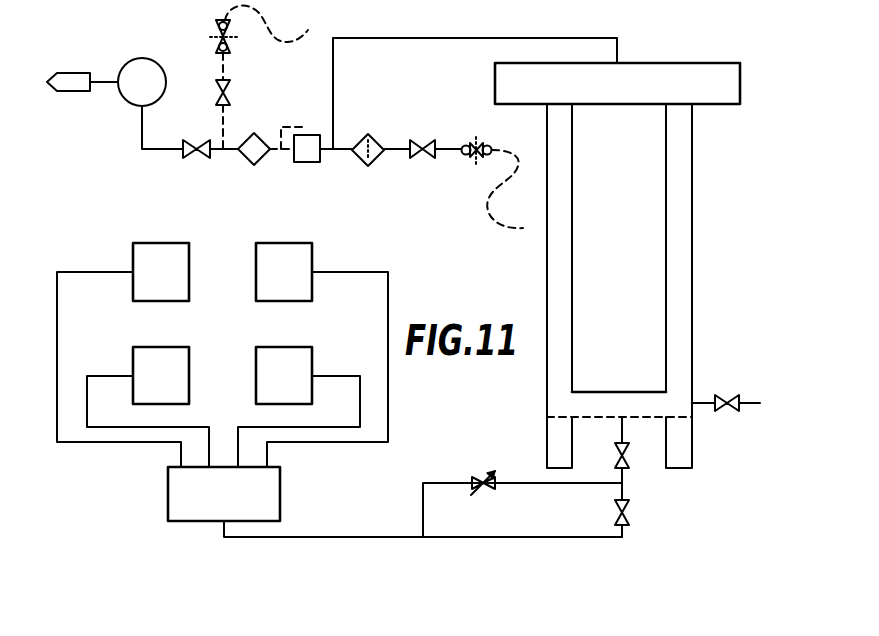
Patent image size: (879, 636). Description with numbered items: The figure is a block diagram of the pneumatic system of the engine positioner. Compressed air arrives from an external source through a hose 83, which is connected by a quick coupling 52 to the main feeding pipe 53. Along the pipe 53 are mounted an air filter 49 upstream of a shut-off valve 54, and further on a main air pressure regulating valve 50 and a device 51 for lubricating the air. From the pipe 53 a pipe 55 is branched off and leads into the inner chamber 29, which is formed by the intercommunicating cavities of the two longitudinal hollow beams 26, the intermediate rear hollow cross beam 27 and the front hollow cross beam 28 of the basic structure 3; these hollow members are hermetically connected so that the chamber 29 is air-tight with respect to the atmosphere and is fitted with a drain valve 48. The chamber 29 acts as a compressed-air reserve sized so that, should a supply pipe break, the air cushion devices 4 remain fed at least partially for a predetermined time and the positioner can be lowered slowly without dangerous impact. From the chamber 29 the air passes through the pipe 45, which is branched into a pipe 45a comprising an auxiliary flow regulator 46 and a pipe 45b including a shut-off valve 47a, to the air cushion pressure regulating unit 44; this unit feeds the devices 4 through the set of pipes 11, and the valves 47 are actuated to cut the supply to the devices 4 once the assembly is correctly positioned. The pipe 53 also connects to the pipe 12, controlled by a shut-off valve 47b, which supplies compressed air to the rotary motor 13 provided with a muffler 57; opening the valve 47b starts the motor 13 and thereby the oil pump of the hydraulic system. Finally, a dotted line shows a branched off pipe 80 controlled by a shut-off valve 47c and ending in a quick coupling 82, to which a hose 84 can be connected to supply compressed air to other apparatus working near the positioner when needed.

The basic structure 3 is at (618, 279).
The air cushion devices 4 is at (147, 350).
The set of pipes 11 is at (118, 428).
The pipe 12 is at (140, 130).
The compressed-air driven motor 13 is at (135, 68).
The longitudinal hollow beams 26 is at (686, 293).
The intermediate rear hollow cross beam 27 is at (710, 90).
The front hollow cross beam 28 is at (537, 82).
The inner chamber 29 is at (675, 167).
The air cushion pressure regulating unit 44 is at (265, 486).
The pipe 45 is at (626, 478).
The pipe 45a is at (522, 482).
The pipe 45b is at (510, 536).
The auxiliary flow regulator 46 is at (478, 482).
The valves 47 is at (616, 464).
The shut-off valve 47a is at (628, 516).
The shut-off valve 47b is at (206, 157).
The shut-off valve 47c is at (229, 89).
The drain valve 48 is at (718, 398).
The air filter 49 is at (372, 136).
The main air pressure regulating valve 50 is at (314, 135).
The device for lubricating the air 51 is at (248, 161).
The quick coupling 52 is at (462, 147).
The main feeding pipe 53 is at (446, 153).
The shut-off valve 54 is at (417, 160).
The pipe 55 is at (472, 38).
The muffler 57 is at (70, 73).
The branched off pipe 80 is at (222, 134).
The quick coupling 82 is at (217, 22).
The hose 83 is at (490, 218).
The hose 84 is at (263, 23).